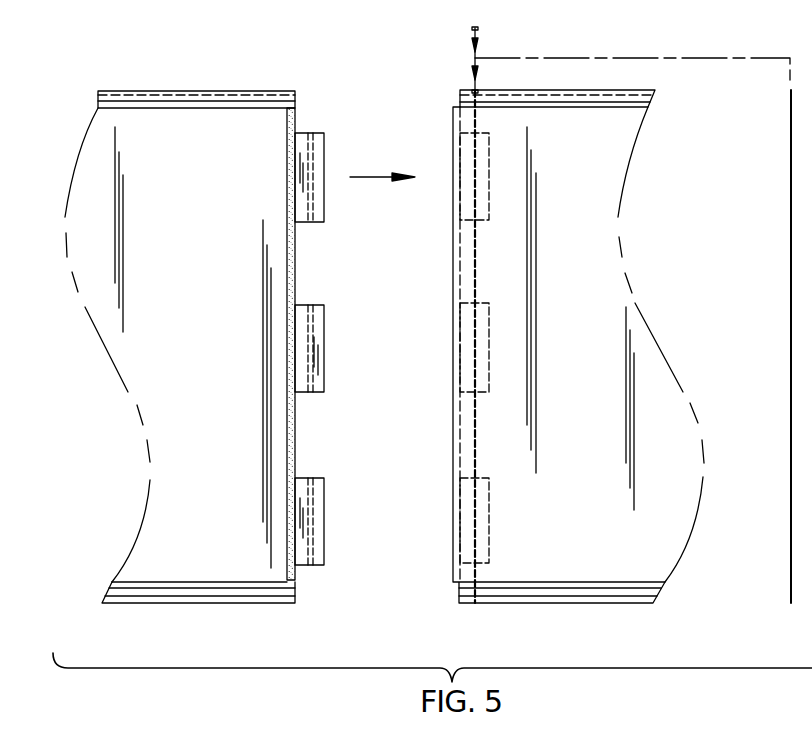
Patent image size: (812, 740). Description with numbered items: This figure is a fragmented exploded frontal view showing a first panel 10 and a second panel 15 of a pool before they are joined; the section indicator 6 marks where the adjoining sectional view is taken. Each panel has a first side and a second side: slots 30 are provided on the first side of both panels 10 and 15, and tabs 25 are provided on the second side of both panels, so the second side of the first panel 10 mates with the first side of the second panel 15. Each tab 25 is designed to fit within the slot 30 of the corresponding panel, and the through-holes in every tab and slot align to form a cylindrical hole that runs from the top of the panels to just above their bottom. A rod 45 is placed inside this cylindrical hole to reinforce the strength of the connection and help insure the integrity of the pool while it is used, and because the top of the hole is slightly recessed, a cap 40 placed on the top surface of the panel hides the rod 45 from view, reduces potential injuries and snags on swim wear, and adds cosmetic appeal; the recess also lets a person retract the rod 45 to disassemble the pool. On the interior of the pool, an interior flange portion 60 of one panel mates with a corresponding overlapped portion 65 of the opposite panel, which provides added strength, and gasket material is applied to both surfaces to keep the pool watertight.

The first panel 10 is at (128, 356).
The second panel 15 is at (620, 130).
The tabs 25 is at (324, 207).
The slots 30 is at (460, 167).
The cap 40 is at (472, 28).
The rod 45 is at (790, 195).
The interior flange portion 60 is at (453, 297).
The overlapped portion 65 is at (290, 423).
The section line for FIG. 6 is at (257, 350).